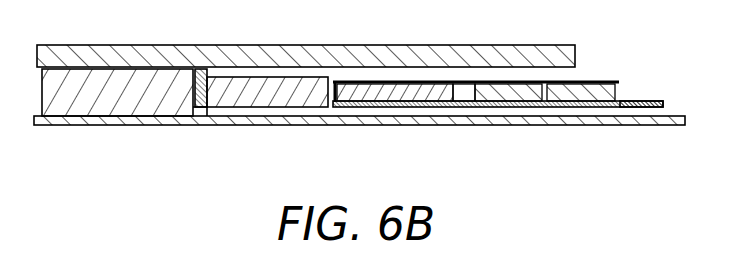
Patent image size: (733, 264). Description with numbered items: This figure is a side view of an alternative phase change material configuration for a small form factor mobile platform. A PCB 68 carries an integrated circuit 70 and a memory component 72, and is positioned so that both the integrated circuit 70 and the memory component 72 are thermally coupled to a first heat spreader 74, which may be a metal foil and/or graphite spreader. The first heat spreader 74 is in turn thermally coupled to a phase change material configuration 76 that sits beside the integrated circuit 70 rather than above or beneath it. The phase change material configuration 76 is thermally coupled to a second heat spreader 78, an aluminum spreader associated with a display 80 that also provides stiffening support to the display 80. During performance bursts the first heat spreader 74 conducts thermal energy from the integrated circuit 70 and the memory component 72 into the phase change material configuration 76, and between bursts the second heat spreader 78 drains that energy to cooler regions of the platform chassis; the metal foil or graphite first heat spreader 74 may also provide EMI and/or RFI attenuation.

The PCB 68 is at (650, 101).
The integrated circuit 70 is at (533, 94).
The memory component 72 is at (591, 104).
The first heat spreader 74 is at (612, 80).
The phase change material configuration 76 is at (263, 94).
The second heat spreader 78 is at (205, 100).
The display 80 is at (544, 46).